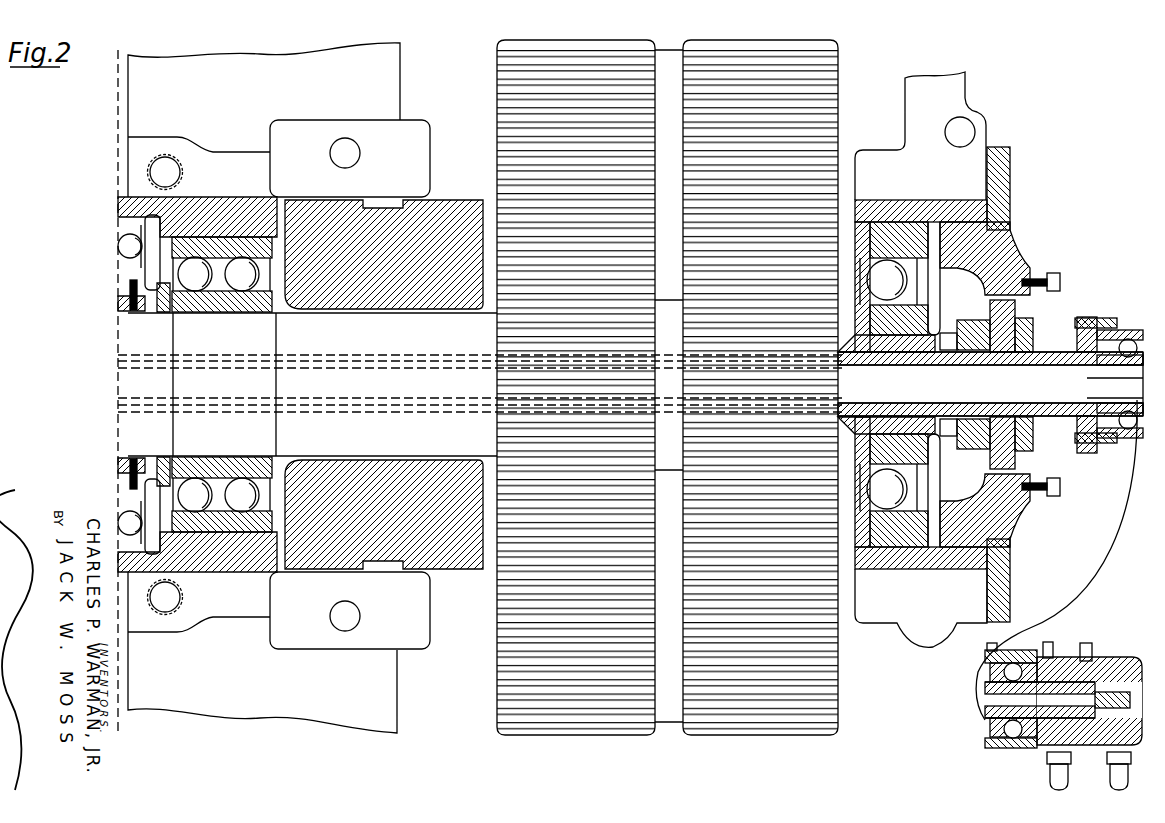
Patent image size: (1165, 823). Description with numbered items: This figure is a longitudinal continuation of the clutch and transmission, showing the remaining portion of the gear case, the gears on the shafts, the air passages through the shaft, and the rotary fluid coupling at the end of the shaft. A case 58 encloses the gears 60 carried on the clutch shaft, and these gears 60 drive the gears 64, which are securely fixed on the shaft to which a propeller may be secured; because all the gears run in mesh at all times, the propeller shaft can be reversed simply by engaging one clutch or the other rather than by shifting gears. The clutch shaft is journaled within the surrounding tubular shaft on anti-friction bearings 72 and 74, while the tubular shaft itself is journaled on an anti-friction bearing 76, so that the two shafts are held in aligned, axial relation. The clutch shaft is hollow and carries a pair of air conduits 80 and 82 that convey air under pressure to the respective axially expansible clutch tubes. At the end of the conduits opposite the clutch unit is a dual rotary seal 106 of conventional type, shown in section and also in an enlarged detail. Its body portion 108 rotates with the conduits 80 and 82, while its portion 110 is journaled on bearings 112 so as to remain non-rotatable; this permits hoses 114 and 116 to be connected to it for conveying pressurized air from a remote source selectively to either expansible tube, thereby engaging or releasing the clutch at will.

The case 58 is at (960, 87).
The gears 60 is at (698, 444).
The gears 64 is at (690, 42).
The anti-friction bearing 72 is at (890, 508).
The anti-friction bearing 74 is at (245, 490).
The anti-friction bearing 76 is at (120, 242).
The air conduit 80 is at (927, 405).
The air conduit 82 is at (990, 396).
The dual rotary seal 106 is at (1107, 465).
The body portion 108 is at (1105, 322).
The non-rotatable portion 110 is at (1098, 657).
The bearings 112 is at (1133, 430).
The hose 114 is at (1050, 778).
The hose 116 is at (1110, 778).